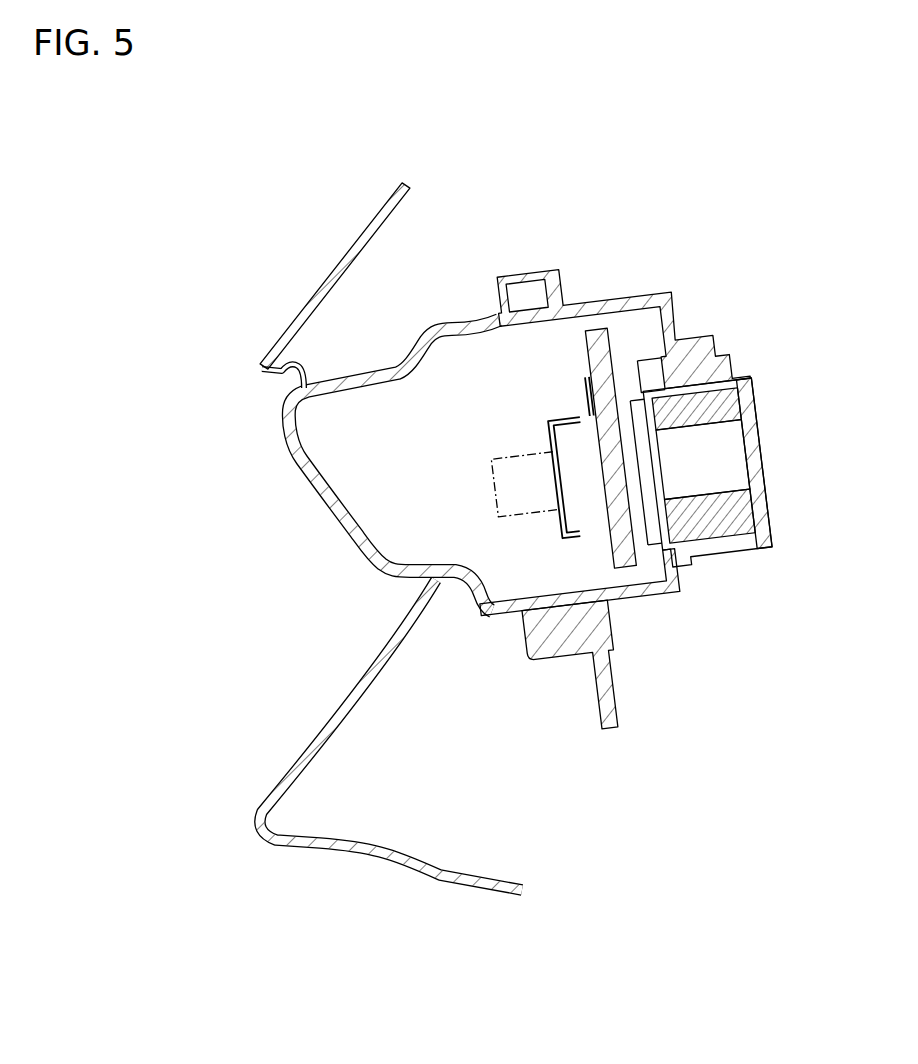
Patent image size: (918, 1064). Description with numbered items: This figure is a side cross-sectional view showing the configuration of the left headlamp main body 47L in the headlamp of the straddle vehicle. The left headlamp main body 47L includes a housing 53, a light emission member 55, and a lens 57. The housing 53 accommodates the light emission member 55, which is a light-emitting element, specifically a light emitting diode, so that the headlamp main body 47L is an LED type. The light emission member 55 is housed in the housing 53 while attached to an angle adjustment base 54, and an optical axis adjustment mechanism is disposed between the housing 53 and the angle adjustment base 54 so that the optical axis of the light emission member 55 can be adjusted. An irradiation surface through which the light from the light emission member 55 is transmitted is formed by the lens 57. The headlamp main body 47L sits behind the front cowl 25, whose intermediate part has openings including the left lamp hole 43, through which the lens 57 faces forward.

The front cowl 25 is at (291, 316).
The left lamp hole 43 is at (290, 443).
The left headlamp main body 47L is at (327, 605).
The housing 53 is at (615, 300).
The angle adjustment base 54 is at (768, 480).
The light emission member 55 is at (505, 455).
The lens 57 is at (328, 507).